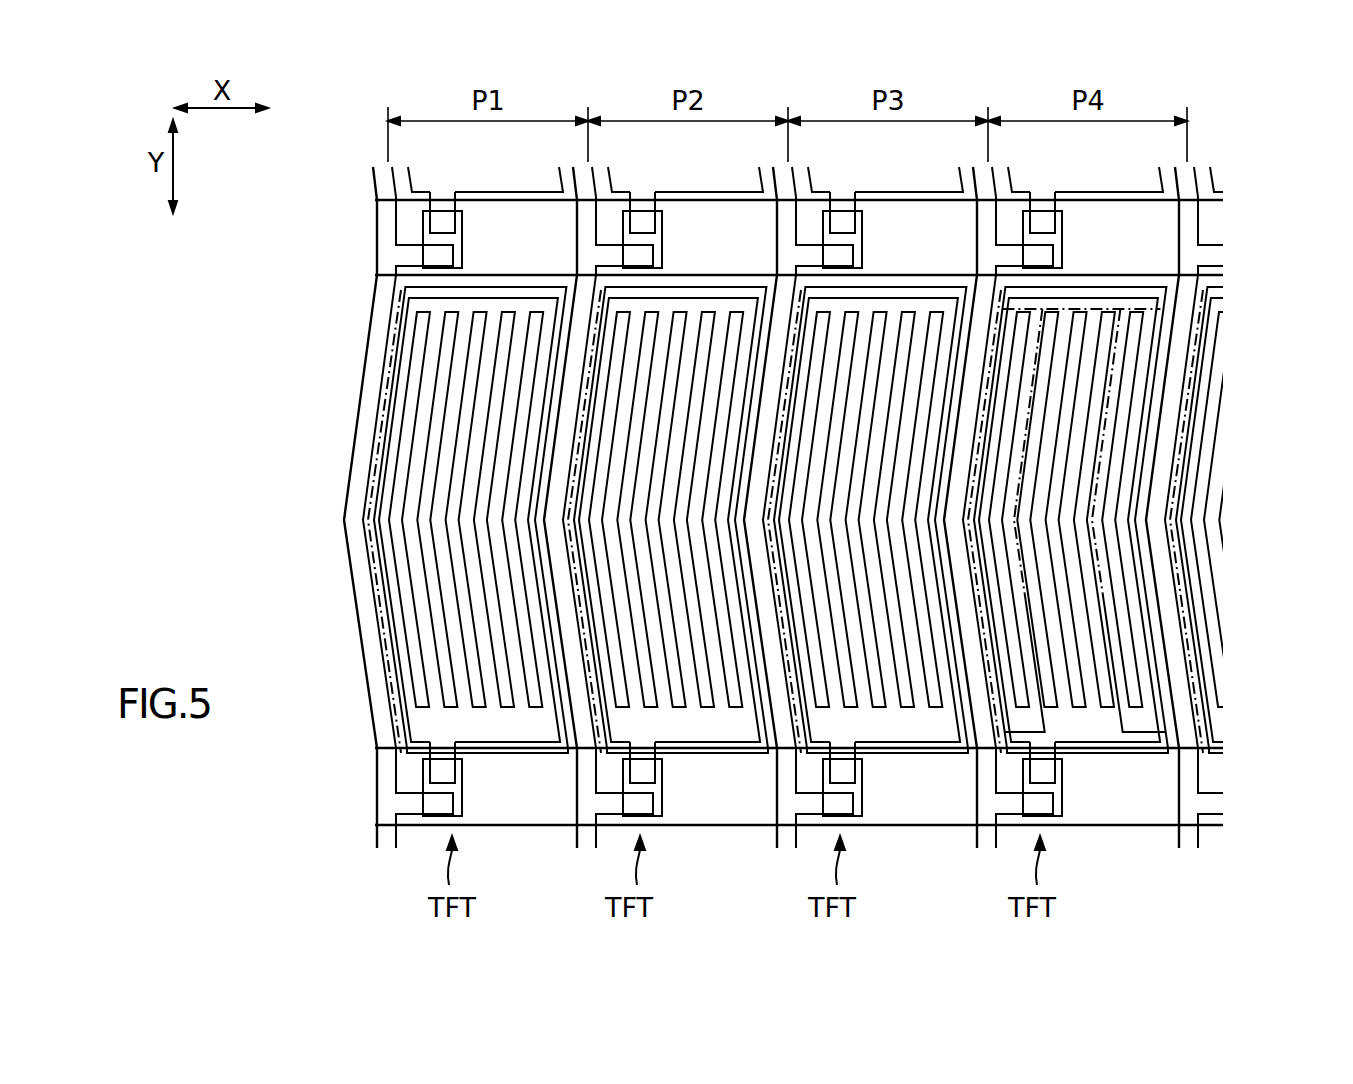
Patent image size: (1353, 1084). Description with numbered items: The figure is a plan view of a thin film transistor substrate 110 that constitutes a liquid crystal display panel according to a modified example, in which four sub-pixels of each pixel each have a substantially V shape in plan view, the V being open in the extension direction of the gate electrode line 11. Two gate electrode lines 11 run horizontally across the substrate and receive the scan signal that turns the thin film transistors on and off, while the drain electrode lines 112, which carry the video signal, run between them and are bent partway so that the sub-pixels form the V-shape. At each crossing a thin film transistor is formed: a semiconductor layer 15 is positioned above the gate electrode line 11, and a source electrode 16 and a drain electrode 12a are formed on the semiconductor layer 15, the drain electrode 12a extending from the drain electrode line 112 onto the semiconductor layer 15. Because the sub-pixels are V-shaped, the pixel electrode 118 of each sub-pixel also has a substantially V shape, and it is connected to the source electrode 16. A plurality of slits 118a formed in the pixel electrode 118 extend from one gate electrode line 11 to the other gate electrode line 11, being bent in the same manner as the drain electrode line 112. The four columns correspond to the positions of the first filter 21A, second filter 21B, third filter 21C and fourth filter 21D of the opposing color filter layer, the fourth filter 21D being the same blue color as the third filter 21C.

The TFT substrate 110 is at (1256, 141).
The gate electrode line 11 is at (398, 198).
The drain electrode 12a is at (433, 810).
The semiconductor layer 15 is at (428, 791).
The source electrode 16 is at (432, 773).
The drain electrode line 112 is at (572, 366).
The pixel electrode 118 is at (396, 639).
The slit 118a is at (426, 707).
The first filter 21A is at (508, 758).
The second filter 21B is at (704, 758).
The third filter 21C is at (908, 758).
The fourth filter 21D is at (1108, 758).